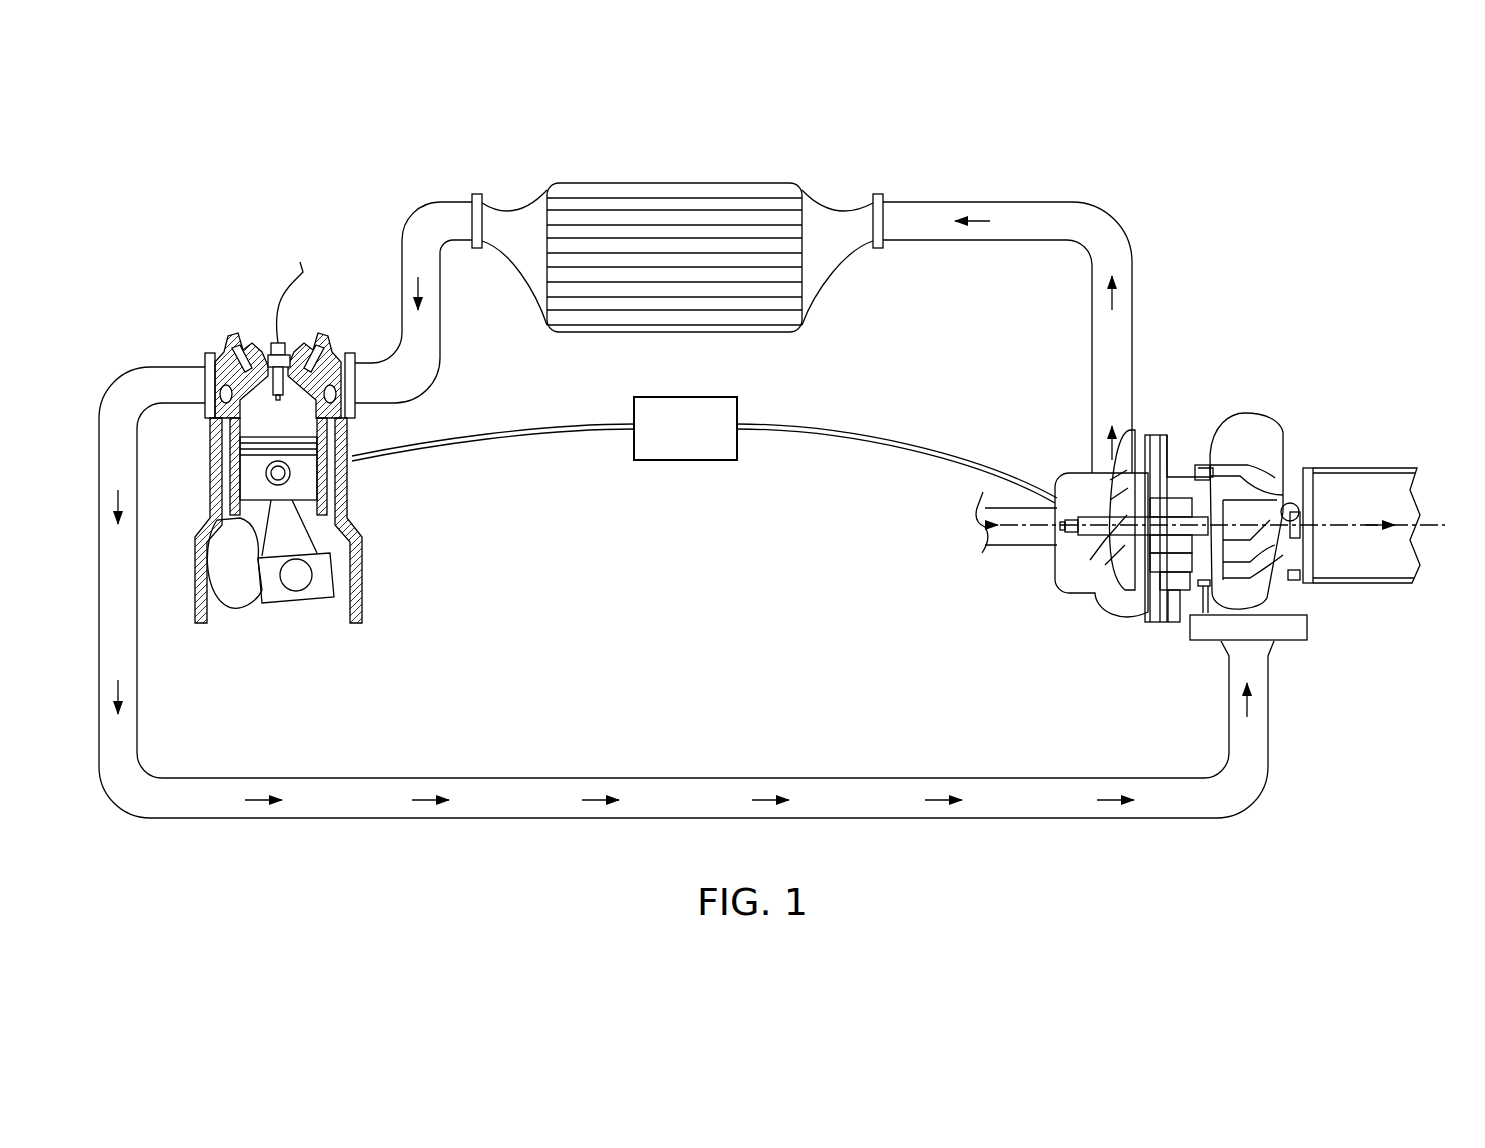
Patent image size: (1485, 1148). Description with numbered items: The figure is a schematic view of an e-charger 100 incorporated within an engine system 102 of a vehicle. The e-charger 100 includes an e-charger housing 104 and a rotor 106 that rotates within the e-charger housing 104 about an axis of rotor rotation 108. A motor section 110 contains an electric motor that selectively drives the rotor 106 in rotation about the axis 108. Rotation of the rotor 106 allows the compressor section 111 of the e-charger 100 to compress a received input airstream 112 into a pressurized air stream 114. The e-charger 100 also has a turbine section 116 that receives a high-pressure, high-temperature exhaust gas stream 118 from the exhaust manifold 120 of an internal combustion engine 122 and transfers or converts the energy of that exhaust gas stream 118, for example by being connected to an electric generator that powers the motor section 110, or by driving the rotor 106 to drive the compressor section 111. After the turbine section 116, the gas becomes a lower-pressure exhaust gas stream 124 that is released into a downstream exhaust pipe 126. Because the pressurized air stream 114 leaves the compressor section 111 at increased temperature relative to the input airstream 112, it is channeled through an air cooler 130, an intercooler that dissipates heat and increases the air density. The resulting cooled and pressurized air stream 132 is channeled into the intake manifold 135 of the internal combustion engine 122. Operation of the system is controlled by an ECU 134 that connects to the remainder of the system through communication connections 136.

The e-charger 100 is at (1250, 342).
The engine system 102 is at (226, 172).
The e-charger housing 104 is at (1170, 474).
The rotor 106 is at (1214, 506).
The axis of rotor rotation 108 is at (1433, 525).
The motor section 110 is at (1183, 630).
The compressor section 111 is at (1105, 621).
The input airstream 112 is at (984, 518).
The pressurized air stream 114 is at (1100, 440).
The turbine section 116 is at (1281, 438).
The exhaust gas stream 118 is at (942, 802).
The exhaust manifold 120 is at (194, 333).
The internal combustion engine 122 is at (300, 414).
The lower-pressure exhaust gas stream 124 is at (1335, 527).
The downstream exhaust pipe 126 is at (1370, 470).
The air cooler 130 is at (663, 205).
The cooled and pressurized air stream 132 is at (418, 292).
The ECU 134 is at (748, 411).
The intake manifold 135 is at (345, 338).
The communication connections 136 is at (862, 436).